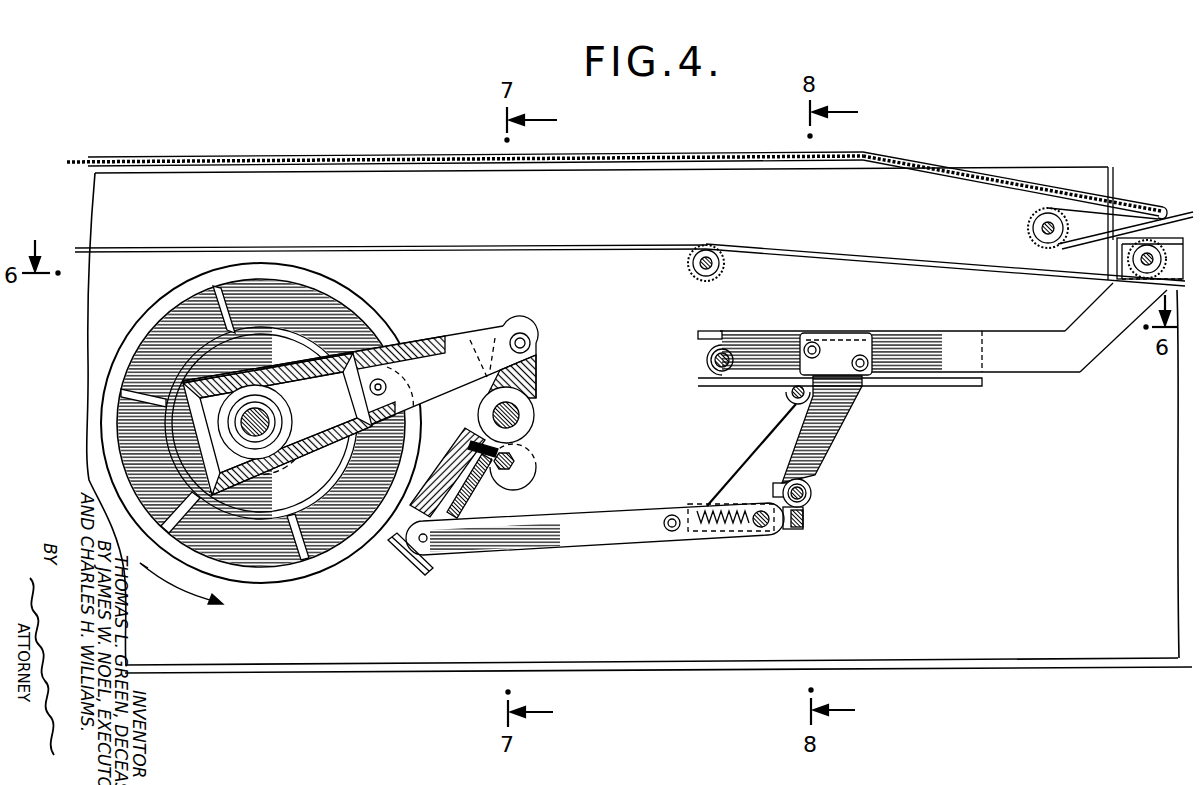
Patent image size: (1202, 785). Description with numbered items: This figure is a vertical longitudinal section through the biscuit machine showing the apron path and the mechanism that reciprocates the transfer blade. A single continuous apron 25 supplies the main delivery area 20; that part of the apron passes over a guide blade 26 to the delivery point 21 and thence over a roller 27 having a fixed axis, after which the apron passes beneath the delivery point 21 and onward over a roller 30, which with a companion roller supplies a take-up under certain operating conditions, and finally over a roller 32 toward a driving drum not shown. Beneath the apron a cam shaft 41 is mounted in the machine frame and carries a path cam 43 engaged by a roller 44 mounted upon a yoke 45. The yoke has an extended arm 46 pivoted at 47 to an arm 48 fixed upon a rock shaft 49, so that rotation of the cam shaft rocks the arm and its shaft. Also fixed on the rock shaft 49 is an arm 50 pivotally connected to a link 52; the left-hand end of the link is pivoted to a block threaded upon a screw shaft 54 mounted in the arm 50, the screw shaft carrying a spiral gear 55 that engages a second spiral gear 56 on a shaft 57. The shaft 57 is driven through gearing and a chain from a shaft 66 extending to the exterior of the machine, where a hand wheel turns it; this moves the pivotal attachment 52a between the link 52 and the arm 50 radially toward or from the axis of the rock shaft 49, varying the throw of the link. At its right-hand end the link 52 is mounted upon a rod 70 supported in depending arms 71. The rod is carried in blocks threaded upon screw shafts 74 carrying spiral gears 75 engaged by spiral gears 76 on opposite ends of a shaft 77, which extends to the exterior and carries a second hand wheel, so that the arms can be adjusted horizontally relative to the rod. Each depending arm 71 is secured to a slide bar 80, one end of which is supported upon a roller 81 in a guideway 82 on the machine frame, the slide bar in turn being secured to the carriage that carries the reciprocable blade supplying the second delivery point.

The main delivery area 20 is at (633, 155).
The delivery point 21 is at (1163, 204).
The apron 25 is at (210, 160).
The guide blade 26 is at (955, 180).
The roller 27 is at (1028, 229).
The roller 30 is at (1128, 259).
The roller 32 is at (690, 272).
The cam shaft 41 is at (272, 421).
The path cam 43 is at (200, 350).
The roller 44 is at (357, 383).
The yoke 45 is at (287, 367).
The extended arm 46 is at (440, 350).
The pivot 47 is at (522, 334).
The arm 48 is at (538, 368).
The rock shaft 49 is at (521, 415).
The arm 50 is at (440, 478).
The link 52 is at (628, 520).
The pivotal attachment 52a is at (436, 557).
The screw shaft 54 is at (476, 492).
The spiral gear 55 is at (478, 432).
The spiral gear 56 is at (539, 449).
The shaft 57 is at (516, 463).
The shaft 66 is at (790, 395).
The rod 70 is at (761, 529).
The depending arm 71 is at (775, 446).
The screw shaft 74 is at (705, 505).
The spiral gear 75 is at (803, 526).
The spiral gear 76 is at (806, 489).
The shaft 77 is at (808, 502).
The slide bar 80 is at (932, 352).
The roller 81 is at (707, 364).
The guideway 82 is at (700, 348).